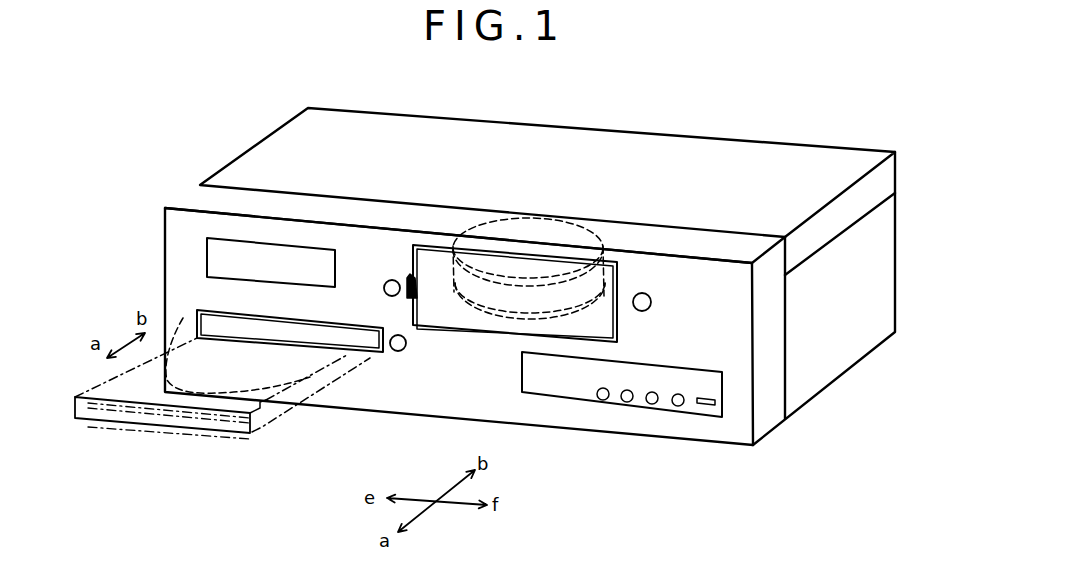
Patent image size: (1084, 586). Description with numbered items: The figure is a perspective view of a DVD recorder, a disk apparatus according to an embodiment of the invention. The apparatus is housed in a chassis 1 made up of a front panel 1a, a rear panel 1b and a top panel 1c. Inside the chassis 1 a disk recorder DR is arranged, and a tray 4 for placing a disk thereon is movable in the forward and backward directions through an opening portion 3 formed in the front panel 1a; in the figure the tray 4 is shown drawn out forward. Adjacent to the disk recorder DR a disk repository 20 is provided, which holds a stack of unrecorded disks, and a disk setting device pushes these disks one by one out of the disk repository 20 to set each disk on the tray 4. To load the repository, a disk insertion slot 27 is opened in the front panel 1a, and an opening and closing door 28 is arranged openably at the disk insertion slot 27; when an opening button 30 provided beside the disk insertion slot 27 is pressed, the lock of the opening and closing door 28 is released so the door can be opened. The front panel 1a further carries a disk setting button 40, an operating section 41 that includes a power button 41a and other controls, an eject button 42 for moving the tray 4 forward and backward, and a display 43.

The chassis 1 is at (534, 260).
The front panel 1a is at (770, 395).
The rear panel 1b is at (852, 351).
The top panel 1c is at (835, 222).
The opening portion 3 is at (338, 322).
The tray 4 is at (222, 375).
The disk repository 20 is at (532, 260).
The disk insertion slot 27 is at (440, 328).
The opening and closing door 28 is at (500, 322).
The opening button 30 is at (387, 281).
The disk setting button 40 is at (650, 296).
The operating section 41 is at (623, 399).
The power button 41a is at (703, 408).
The eject button 42 is at (398, 352).
The display 43 is at (212, 255).
The disk recorder DR is at (335, 396).